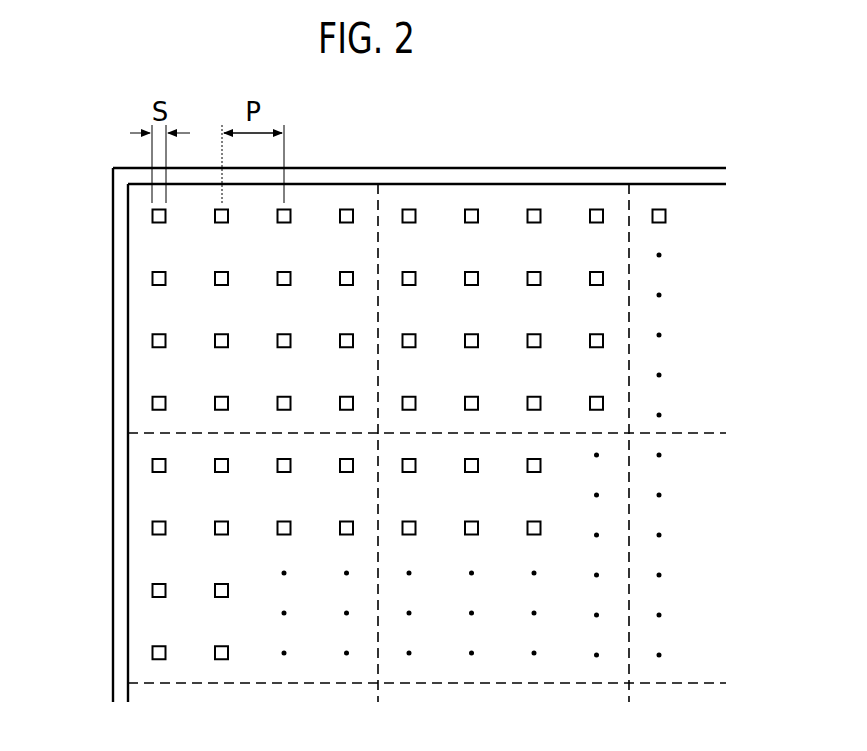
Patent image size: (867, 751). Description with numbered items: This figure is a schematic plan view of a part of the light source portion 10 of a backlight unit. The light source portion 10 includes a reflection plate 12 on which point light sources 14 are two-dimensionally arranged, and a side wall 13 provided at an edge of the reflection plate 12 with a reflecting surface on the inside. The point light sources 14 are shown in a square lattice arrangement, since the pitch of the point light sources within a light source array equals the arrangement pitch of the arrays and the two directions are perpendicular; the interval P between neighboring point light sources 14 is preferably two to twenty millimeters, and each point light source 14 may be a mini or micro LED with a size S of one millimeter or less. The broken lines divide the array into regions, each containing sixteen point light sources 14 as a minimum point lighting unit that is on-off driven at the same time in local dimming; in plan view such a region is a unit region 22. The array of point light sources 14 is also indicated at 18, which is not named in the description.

The light source portion 10 is at (660, 165).
The reflection plate 12 is at (138, 248).
The side wall 13 is at (118, 334).
The point light source 14 is at (152, 216).
The pixel region 18 is at (146, 553).
The unit region 22 is at (320, 196).